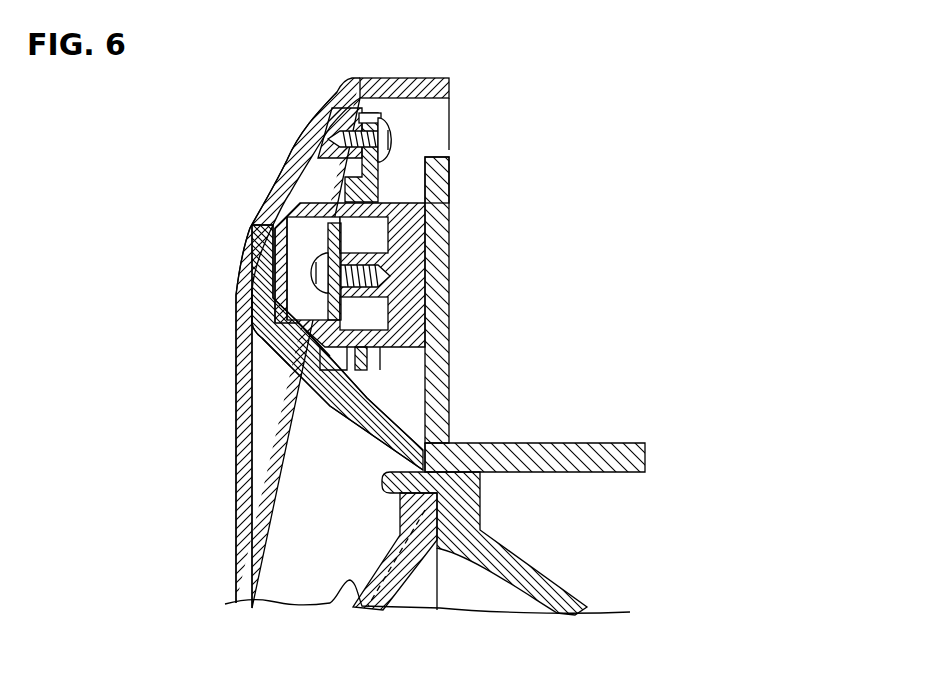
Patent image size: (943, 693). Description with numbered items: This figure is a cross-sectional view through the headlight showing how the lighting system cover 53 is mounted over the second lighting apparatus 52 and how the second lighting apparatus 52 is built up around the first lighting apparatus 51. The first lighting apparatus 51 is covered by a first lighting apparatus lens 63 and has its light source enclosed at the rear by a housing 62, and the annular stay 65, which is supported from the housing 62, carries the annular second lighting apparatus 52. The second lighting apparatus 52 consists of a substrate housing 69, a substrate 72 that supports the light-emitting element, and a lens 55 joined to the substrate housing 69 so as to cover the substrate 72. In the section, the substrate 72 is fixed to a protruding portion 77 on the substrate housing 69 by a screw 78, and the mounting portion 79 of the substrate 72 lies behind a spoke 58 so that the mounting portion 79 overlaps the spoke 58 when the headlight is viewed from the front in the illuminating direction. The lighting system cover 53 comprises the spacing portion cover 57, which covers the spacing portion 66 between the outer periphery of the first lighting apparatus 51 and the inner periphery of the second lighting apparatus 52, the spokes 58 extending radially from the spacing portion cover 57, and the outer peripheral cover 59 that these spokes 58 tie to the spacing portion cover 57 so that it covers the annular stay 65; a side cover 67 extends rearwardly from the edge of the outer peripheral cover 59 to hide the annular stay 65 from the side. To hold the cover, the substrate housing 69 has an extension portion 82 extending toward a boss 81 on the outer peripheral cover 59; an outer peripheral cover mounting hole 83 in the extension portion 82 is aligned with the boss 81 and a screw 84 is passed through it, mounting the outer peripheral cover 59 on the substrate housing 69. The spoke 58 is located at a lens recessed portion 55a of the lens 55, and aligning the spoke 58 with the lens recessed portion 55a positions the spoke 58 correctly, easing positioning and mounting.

The first lighting apparatus 51 is at (350, 556).
The second lighting apparatus 52 is at (269, 347).
The lighting system cover 53 is at (298, 133).
The lens 55 is at (255, 284).
The lens recessed portion 55a is at (262, 316).
The spacing portion cover 57 is at (297, 400).
The spoke 58 is at (274, 262).
The outer peripheral cover 59 is at (285, 178).
The housing 62 is at (553, 587).
The first lighting apparatus lens 63 is at (347, 585).
The annular stay 65 is at (614, 443).
The spacing portion 66 is at (473, 300).
The side cover 67 is at (442, 78).
The substrate housing 69 is at (423, 362).
The substrate 72 is at (300, 374).
The protruding portion 77 is at (422, 244).
The screw 78 is at (270, 342).
The mounting portion 79 is at (313, 243).
The boss 81 is at (337, 97).
The extension portion 82 is at (426, 192).
The outer peripheral cover mounting hole 83 is at (359, 108).
The screw 84 is at (400, 138).